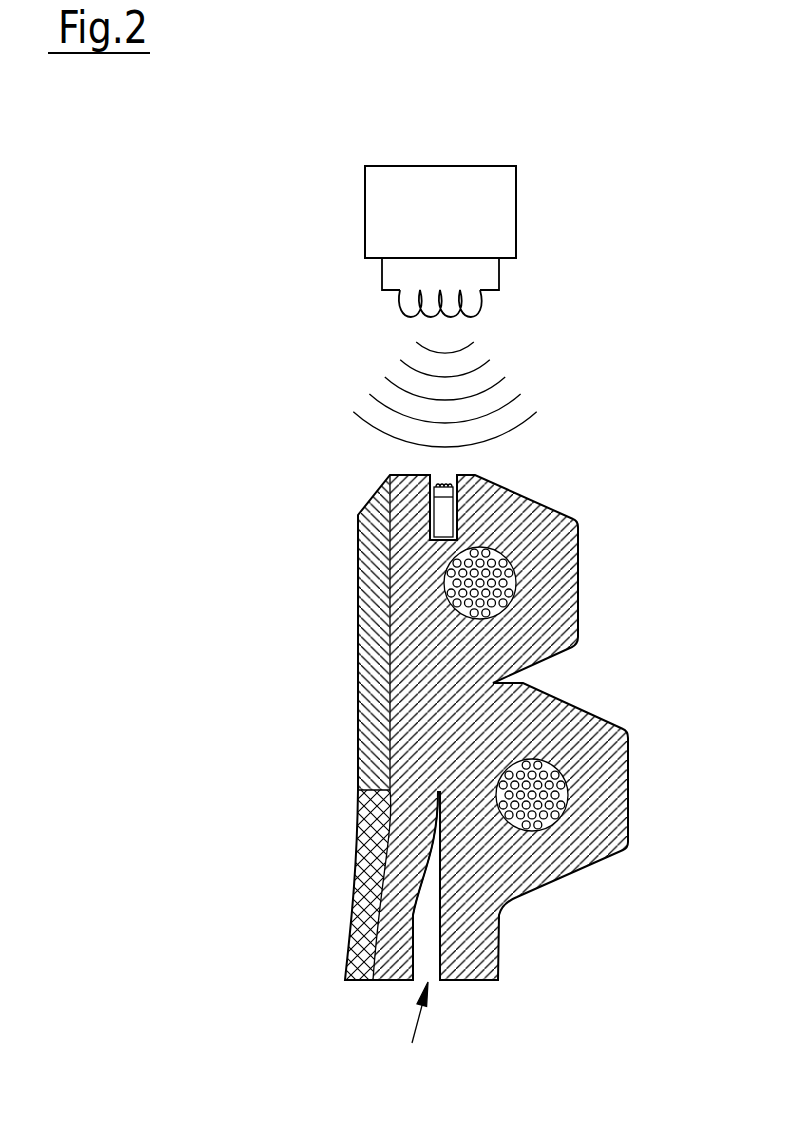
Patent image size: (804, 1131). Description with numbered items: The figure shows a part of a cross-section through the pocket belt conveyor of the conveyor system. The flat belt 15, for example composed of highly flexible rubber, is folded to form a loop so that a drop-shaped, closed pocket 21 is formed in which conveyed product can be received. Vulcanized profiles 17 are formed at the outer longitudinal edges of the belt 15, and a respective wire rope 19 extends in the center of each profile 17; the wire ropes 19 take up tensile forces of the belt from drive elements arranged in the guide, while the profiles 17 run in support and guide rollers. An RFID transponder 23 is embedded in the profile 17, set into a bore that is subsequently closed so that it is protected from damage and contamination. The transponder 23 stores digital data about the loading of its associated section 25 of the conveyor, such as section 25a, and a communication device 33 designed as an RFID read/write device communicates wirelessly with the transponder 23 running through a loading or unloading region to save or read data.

The communication device 33 is at (365, 185).
The RFID transponder 23 is at (445, 477).
The vulcanized profile 17 is at (562, 575).
The wire rope 19 is at (515, 596).
The flat belt 15 is at (357, 853).
The pocket 21 is at (437, 948).
The section 25 is at (404, 1032).
The section 25a is at (420, 1012).